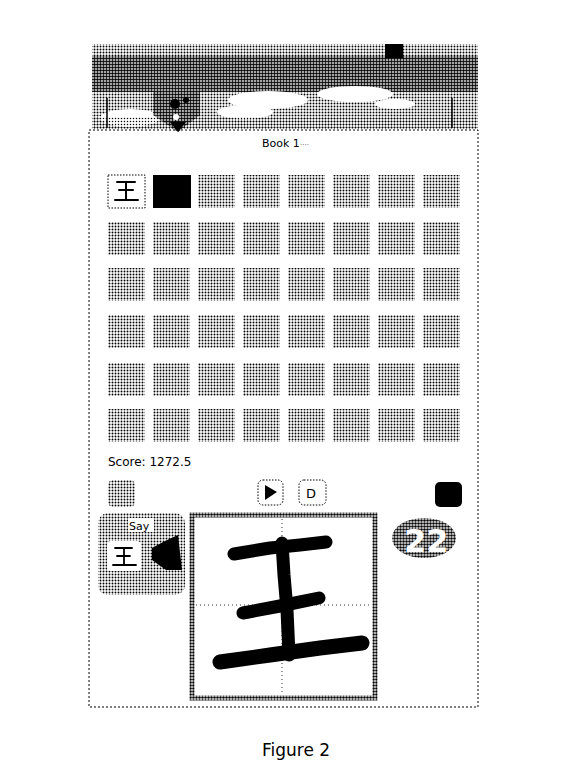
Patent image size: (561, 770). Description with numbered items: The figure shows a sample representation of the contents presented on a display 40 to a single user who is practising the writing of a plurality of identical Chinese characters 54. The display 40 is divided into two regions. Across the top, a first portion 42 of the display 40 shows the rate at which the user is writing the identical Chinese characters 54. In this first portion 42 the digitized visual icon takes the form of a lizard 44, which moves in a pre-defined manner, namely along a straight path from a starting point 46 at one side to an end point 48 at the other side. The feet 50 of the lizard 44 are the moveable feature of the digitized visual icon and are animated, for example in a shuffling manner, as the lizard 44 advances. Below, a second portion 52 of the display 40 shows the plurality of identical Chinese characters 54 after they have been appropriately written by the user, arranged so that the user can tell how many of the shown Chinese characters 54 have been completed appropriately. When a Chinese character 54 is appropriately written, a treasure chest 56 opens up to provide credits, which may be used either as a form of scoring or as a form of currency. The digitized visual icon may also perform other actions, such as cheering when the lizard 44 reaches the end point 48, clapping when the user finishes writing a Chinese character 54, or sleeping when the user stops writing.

The display 40 is at (472, 587).
The first portion 42 is at (397, 68).
The lizard 44 is at (178, 97).
The starting point 46 is at (107, 113).
The end point 48 is at (452, 115).
The feet 50 is at (180, 128).
The second portion 52 is at (280, 308).
The Chinese characters 54 is at (110, 185).
The treasure chest 56 is at (437, 237).